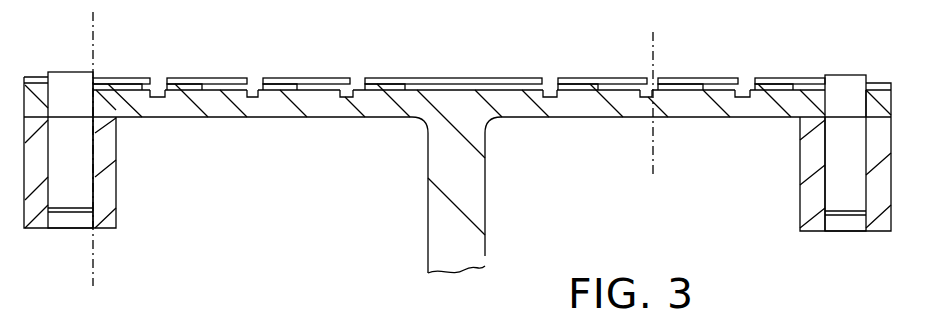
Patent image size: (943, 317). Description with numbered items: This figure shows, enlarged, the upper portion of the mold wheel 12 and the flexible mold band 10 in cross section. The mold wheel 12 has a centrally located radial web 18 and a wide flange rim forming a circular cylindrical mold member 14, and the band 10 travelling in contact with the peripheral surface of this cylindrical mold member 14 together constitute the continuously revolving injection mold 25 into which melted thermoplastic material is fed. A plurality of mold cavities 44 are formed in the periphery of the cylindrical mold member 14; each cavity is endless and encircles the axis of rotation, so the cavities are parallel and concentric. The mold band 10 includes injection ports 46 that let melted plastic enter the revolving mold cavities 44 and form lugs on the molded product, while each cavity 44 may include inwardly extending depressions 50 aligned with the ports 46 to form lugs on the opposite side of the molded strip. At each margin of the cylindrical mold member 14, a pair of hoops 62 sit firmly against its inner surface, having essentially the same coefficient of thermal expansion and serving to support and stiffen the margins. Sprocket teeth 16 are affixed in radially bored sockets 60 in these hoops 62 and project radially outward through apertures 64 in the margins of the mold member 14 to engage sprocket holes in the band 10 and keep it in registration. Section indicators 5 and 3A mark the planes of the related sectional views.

The mold band 10 is at (445, 70).
The mold wheel 12 is at (420, 156).
The cylindrical mold member 14 is at (320, 105).
The sprocket teeth 16 is at (68, 80).
The radial web 18 is at (485, 256).
The injection mold 25 is at (776, 70).
The mold cavities 44 is at (196, 92).
The injection ports 46 is at (253, 80).
The depressions 50 is at (163, 98).
The sockets 60 is at (93, 173).
The hoops 62 is at (116, 217).
The apertures 64 is at (93, 100).
The section line 5- 5 is at (80, 34).
The section line 3A- 3A is at (640, 50).